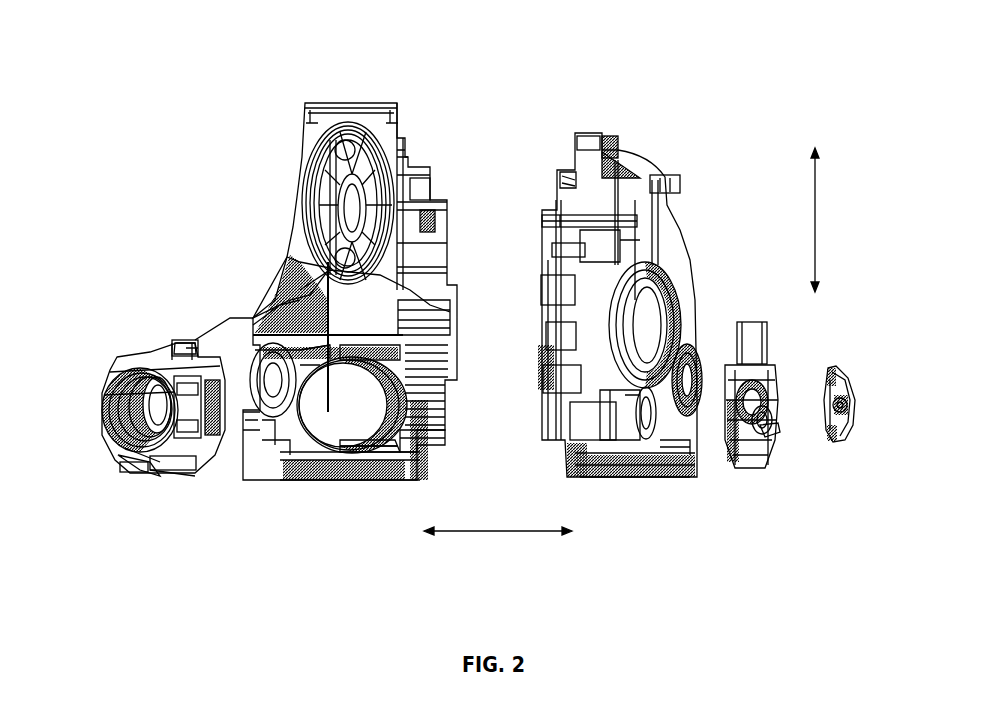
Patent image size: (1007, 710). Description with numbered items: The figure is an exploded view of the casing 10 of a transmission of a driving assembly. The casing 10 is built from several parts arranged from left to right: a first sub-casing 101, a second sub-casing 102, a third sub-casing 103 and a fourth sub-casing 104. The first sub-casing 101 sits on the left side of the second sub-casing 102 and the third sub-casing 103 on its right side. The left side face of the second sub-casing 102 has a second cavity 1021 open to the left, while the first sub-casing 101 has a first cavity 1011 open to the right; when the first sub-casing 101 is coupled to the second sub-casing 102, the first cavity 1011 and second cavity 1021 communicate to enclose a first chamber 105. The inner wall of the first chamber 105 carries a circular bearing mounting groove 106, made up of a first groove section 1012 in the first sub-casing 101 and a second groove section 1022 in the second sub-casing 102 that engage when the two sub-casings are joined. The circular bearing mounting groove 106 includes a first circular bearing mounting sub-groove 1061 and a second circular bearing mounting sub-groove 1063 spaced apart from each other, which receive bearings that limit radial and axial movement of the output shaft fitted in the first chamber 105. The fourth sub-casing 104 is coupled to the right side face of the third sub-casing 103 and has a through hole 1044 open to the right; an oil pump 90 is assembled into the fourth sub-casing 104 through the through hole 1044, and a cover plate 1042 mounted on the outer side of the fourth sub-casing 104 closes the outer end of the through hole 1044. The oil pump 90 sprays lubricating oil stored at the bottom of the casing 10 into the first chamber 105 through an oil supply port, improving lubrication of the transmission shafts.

The casing 10 is at (136, 100).
The first sub-casing 101 is at (126, 360).
The first cavity 1011 is at (194, 352).
The first groove section 1012 is at (138, 433).
The second sub-casing 102 is at (325, 105).
The second cavity 1021 is at (278, 277).
The second groove section 1022 is at (393, 403).
The third sub-casing 103 is at (608, 164).
The fourth sub-casing 104 is at (762, 445).
The cover plate 1042 is at (852, 390).
The through hole 1044 is at (778, 423).
The first chamber 105 is at (150, 213).
The circular bearing mounting groove 106 is at (240, 540).
The first circular bearing mounting sub-groove 1061 is at (410, 346).
The second circular bearing mounting sub-groove 1063 is at (407, 456).
The oil pump 90 is at (773, 418).